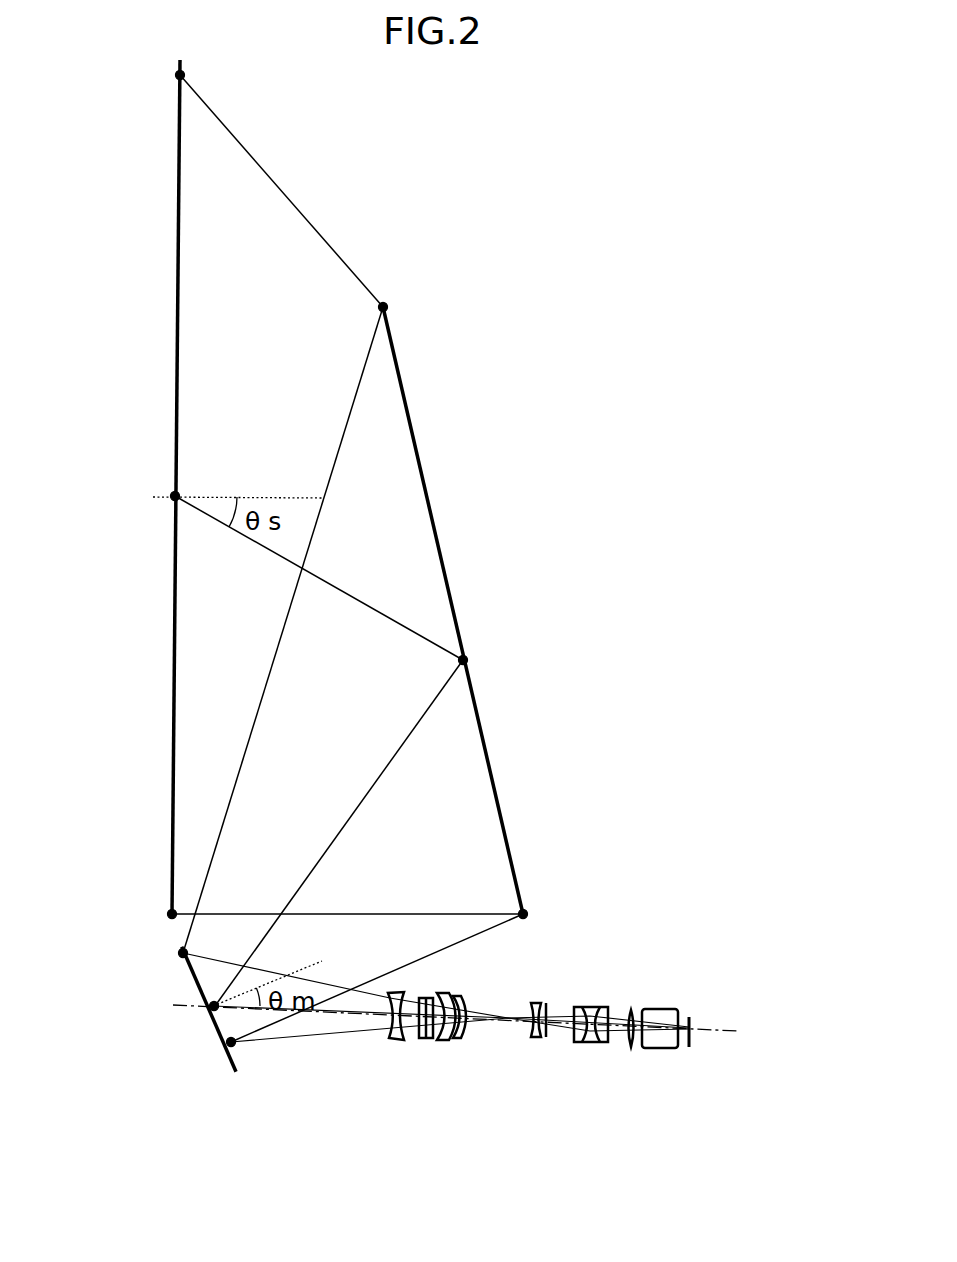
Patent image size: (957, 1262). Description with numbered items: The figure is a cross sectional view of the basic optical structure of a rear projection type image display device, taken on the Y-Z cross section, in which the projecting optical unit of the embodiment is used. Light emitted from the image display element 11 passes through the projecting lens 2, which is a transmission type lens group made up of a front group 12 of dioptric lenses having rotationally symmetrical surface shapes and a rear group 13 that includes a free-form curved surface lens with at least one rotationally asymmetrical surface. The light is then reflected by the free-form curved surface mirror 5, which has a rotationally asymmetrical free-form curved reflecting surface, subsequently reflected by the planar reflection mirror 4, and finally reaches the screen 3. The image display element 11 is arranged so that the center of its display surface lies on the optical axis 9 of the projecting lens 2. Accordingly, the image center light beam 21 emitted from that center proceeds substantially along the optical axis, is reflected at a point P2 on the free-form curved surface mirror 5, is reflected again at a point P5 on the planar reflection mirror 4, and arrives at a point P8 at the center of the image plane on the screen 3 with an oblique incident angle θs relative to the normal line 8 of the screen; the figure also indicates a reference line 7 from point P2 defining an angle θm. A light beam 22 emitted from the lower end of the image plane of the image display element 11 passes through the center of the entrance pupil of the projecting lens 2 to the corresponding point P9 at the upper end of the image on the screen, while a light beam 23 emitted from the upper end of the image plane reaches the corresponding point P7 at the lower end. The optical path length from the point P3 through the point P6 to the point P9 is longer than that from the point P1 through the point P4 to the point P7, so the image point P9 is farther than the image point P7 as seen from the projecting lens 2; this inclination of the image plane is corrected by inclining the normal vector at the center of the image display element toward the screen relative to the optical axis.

The projecting lens 2 is at (528, 1088).
The screen 3 is at (176, 310).
The planar reflection mirror 4 is at (430, 507).
The free-form curved surface mirror 5 is at (238, 1060).
The reference line 7 is at (312, 963).
The normal line of the screen 8 is at (298, 496).
The optical axis 9 is at (745, 1030).
The image display element 11 is at (690, 1012).
The front group 12 is at (558, 1059).
The rear group 13 is at (435, 1048).
The light beam 21 is at (380, 618).
The light beam 22 is at (285, 196).
The light beam 23 is at (385, 914).
The point P1 is at (228, 1045).
The point P2 is at (210, 1008).
The point P3 is at (182, 954).
The point P4 is at (525, 914).
The point P5 is at (466, 662).
The point P6 is at (386, 309).
The point P7 is at (171, 913).
The point P8 is at (173, 500).
The point P9 is at (178, 78).